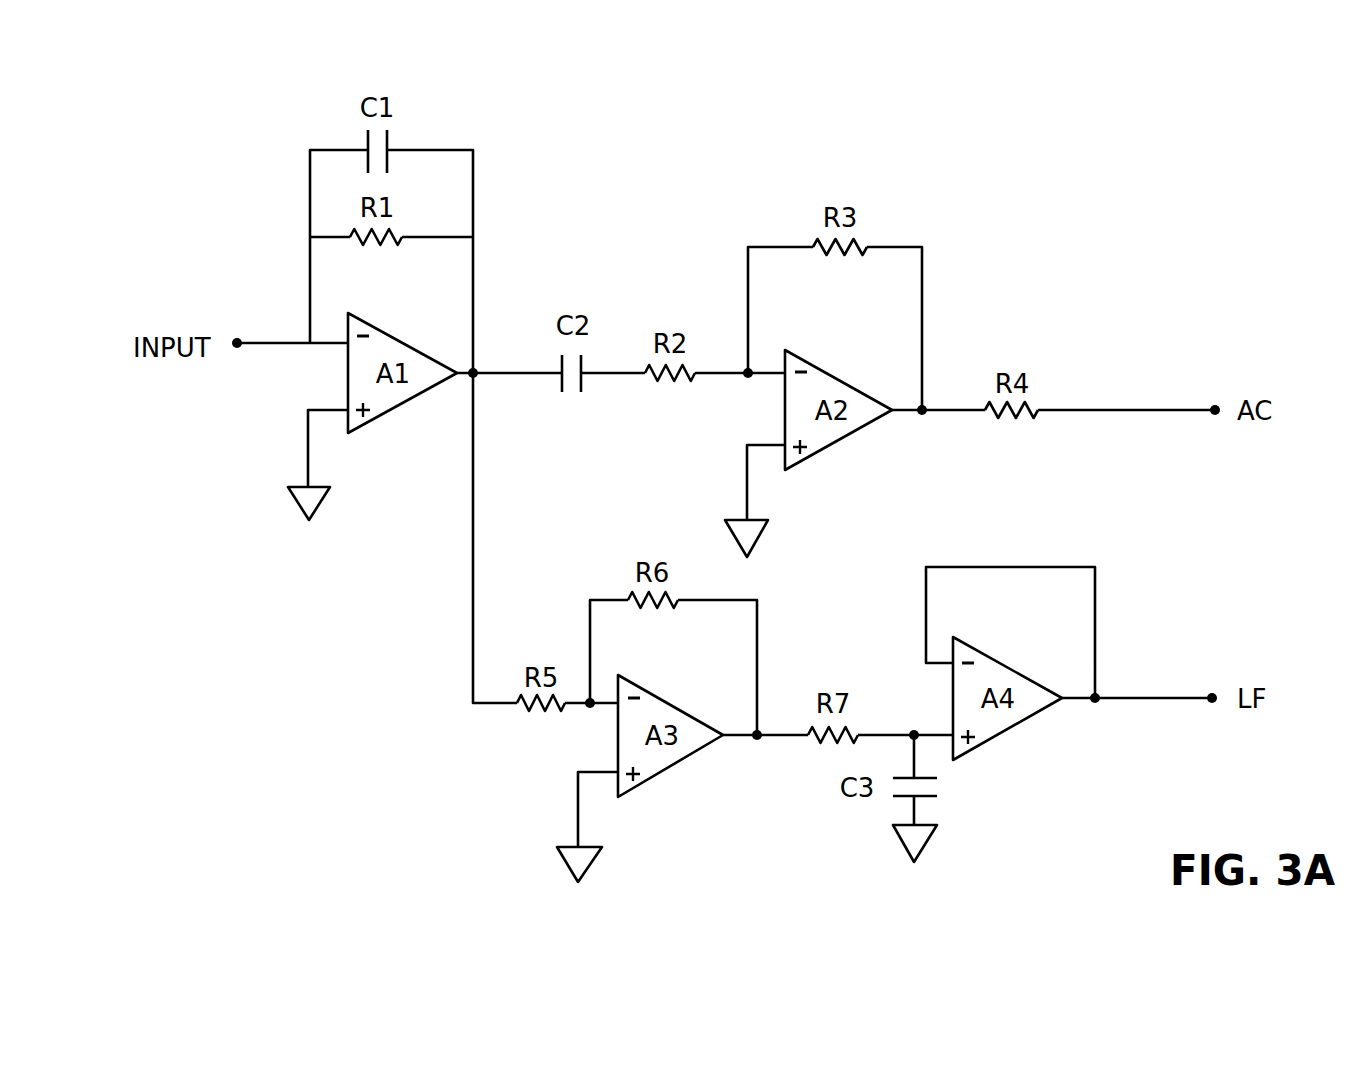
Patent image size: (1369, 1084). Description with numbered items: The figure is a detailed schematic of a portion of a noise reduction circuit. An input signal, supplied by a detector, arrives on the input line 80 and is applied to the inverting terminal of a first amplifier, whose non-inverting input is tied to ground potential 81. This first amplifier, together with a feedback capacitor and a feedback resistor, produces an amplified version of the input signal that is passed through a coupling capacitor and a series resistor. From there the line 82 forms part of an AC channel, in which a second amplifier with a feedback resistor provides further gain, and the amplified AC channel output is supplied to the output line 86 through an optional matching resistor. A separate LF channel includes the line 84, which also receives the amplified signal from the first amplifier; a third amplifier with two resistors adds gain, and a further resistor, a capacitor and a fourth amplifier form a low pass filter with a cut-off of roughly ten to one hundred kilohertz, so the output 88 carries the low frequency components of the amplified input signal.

The input line 80 is at (265, 341).
The ground potential 81 is at (300, 513).
The AC channel line 82 is at (612, 376).
The LF channel line 84 is at (473, 618).
The AC channel output line 86 is at (1110, 409).
The LF output 88 is at (1152, 697).